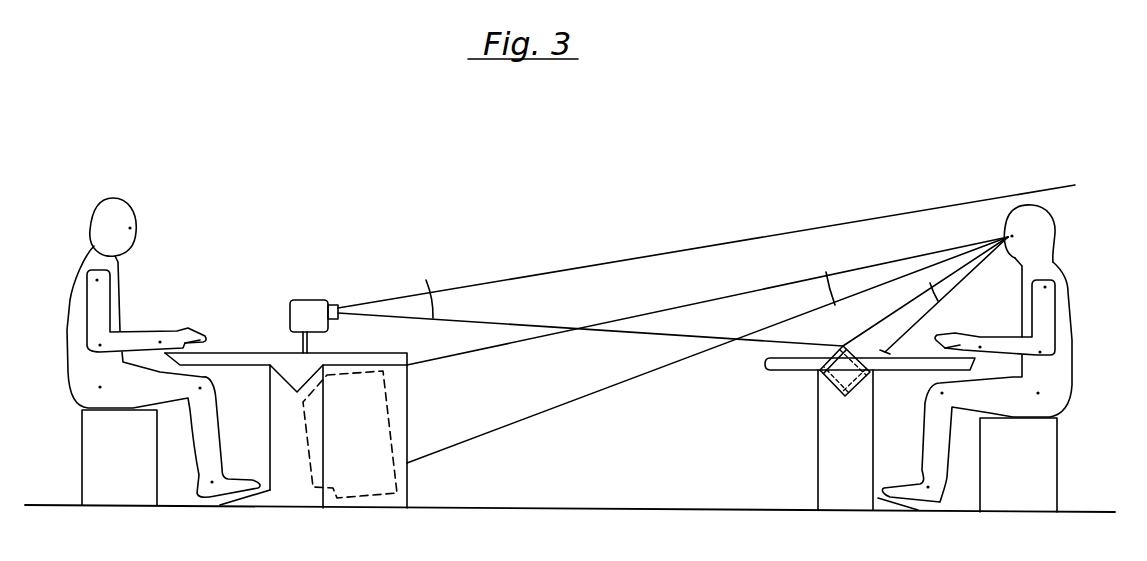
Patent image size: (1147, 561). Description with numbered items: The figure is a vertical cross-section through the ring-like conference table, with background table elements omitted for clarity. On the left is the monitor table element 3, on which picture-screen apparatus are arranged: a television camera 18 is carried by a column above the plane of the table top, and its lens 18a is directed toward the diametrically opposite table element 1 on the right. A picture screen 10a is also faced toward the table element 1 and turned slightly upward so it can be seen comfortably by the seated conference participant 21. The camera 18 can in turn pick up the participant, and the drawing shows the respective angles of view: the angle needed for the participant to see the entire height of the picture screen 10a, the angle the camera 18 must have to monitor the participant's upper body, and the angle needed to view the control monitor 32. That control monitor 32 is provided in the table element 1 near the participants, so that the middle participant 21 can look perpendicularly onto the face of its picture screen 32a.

The table element 1 is at (798, 374).
The monitor table element 3 is at (254, 351).
The picture screen 10a is at (398, 420).
The television camera 18 is at (296, 301).
The lens 18a is at (334, 303).
The conference participant 21 is at (1068, 294).
The control monitor 32 is at (841, 345).
The picture screen of the control monitor 32a is at (885, 352).